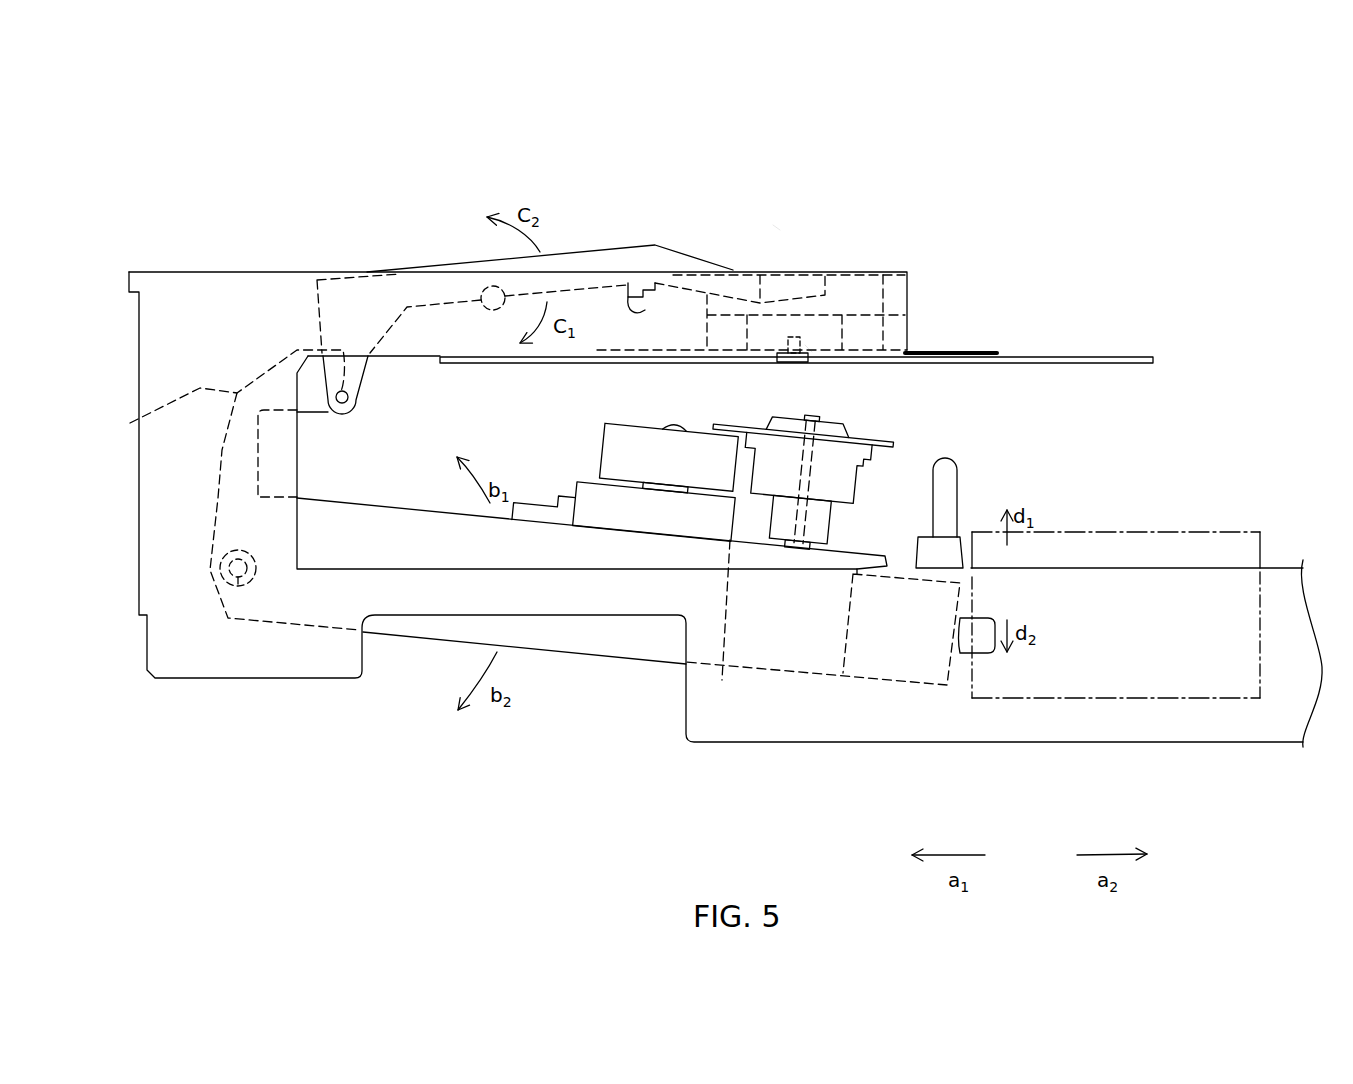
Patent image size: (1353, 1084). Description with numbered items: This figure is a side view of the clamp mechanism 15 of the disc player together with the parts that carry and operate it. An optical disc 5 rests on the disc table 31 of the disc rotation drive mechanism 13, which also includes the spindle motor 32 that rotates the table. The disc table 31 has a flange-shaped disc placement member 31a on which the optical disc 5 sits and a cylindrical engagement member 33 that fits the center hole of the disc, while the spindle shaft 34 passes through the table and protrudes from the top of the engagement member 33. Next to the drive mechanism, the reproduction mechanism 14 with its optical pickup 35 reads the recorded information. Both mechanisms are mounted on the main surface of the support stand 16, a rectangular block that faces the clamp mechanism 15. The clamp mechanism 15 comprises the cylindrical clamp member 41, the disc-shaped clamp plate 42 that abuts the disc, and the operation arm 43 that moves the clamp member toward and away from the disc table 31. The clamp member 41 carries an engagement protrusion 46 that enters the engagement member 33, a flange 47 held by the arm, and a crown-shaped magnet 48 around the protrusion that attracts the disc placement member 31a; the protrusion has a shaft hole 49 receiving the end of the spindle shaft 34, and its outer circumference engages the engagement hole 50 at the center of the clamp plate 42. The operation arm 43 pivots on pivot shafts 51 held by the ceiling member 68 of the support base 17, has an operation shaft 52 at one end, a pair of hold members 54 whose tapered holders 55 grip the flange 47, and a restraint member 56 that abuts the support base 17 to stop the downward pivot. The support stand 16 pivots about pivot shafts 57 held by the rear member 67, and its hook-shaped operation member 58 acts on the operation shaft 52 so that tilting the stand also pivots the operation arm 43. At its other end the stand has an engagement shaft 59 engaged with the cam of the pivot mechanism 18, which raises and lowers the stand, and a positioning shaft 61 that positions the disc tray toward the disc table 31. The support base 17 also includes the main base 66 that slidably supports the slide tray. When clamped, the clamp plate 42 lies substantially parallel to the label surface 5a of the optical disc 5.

The optical disc 5 is at (1117, 357).
The label surface 5a is at (1012, 353).
The disc rotation drive mechanism 13 is at (858, 491).
The reproduction mechanism 14 is at (592, 456).
The clamp mechanism 15 is at (773, 225).
The support stand 16 is at (382, 520).
The support base 17 is at (340, 662).
The pivot mechanism 18 is at (1243, 530).
The disc table 31 is at (856, 476).
The disc placement member 31a is at (893, 440).
The spindle motor 32 is at (750, 622).
The engagement member 33 is at (770, 422).
The spindle shaft 34 is at (815, 416).
The optical pickup 35 is at (605, 440).
The clamp member 41 is at (873, 270).
The clamp plate 42 is at (993, 350).
The operation arm 43 is at (563, 256).
The engagement protrusion 46 is at (808, 362).
The flange 47 is at (907, 270).
The magnet 48 is at (868, 333).
The shaft hole 49 is at (800, 350).
The engagement hole 50 is at (777, 350).
The pivot shaft 51 is at (487, 290).
The operation shaft 52 is at (350, 397).
The hold member 54 is at (700, 262).
The holder 55 is at (803, 272).
The restraint member 56 is at (622, 282).
The pivot shaft 57 is at (228, 620).
The operation member 58 is at (215, 398).
The engagement shaft 59 is at (982, 653).
The positioning shaft 61 is at (958, 468).
The main base 66 is at (1190, 727).
The rear member 67 is at (153, 342).
The ceiling member 68 is at (897, 298).